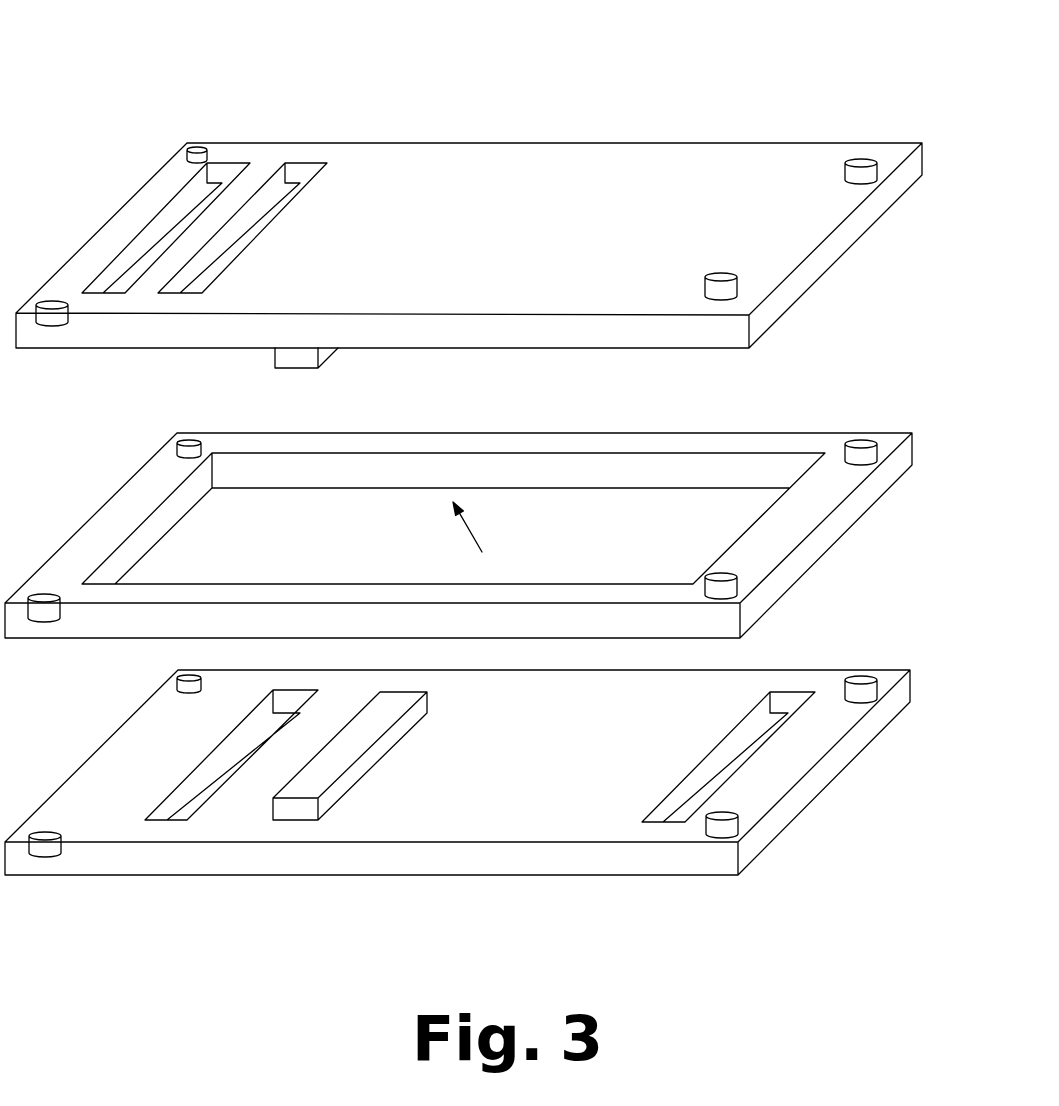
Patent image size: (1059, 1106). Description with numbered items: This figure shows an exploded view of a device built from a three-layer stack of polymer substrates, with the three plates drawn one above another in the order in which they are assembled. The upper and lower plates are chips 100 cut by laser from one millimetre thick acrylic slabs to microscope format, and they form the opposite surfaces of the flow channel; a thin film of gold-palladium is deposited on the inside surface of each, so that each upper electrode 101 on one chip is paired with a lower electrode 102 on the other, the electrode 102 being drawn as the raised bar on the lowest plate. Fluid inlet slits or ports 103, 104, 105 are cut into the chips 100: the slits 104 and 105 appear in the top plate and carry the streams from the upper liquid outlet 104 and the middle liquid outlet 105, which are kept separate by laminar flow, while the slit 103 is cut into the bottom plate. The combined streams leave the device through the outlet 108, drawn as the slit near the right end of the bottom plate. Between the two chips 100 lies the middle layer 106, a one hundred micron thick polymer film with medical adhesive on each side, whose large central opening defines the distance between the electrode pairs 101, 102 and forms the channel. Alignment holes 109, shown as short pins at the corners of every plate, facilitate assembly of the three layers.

The chip 100 is at (681, 171).
The upper electrode 101 is at (300, 364).
The lower electrode 102 is at (349, 777).
The fluid inlet slit 103 is at (232, 767).
The upper liquid outlet 104 is at (265, 215).
The middle liquid outlet 105 is at (167, 237).
The middle layer 106 is at (755, 537).
The outlet 108 is at (727, 765).
The alignment hole 109 is at (844, 140).